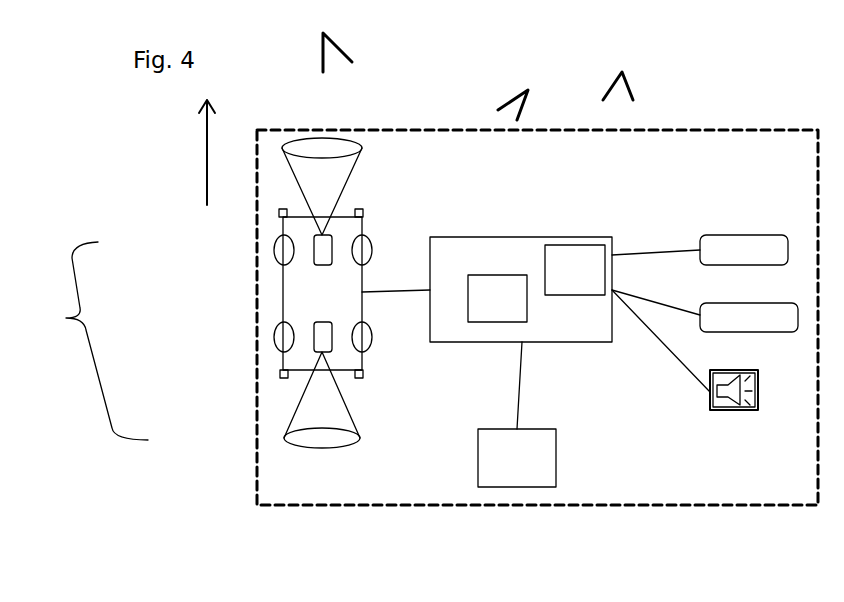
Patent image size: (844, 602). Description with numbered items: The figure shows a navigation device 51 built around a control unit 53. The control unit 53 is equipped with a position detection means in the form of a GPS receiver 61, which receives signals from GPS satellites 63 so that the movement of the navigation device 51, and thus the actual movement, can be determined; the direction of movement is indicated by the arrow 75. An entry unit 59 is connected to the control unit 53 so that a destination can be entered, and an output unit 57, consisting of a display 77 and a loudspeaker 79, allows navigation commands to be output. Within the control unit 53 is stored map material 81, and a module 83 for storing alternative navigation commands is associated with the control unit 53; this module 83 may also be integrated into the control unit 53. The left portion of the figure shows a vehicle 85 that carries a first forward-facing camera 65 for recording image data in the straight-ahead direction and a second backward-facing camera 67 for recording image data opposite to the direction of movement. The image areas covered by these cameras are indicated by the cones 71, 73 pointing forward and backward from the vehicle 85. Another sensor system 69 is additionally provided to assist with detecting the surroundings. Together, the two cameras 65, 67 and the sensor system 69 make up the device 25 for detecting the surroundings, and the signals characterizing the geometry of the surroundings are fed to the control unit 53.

The device for detecting the surroundings 25 is at (66, 318).
The navigation device 51 is at (246, 230).
The control unit 53 is at (529, 225).
The output unit 57 is at (738, 333).
The entry unit 59 is at (738, 253).
The GPS receiver 61 is at (578, 274).
The GPS satellites 63 is at (366, 58).
The first forward-facing camera 65 is at (322, 255).
The second backward-facing camera 67 is at (322, 332).
The sensor system 69 is at (356, 374).
The cone 71 is at (366, 180).
The cone 73 is at (286, 446).
The arrow 75 is at (205, 152).
The display 77 is at (720, 330).
The loudspeaker 79 is at (735, 411).
The stored map material 81 is at (488, 315).
The module for storing alternative navigation commands 83 is at (516, 488).
The vehicle 85 is at (326, 294).